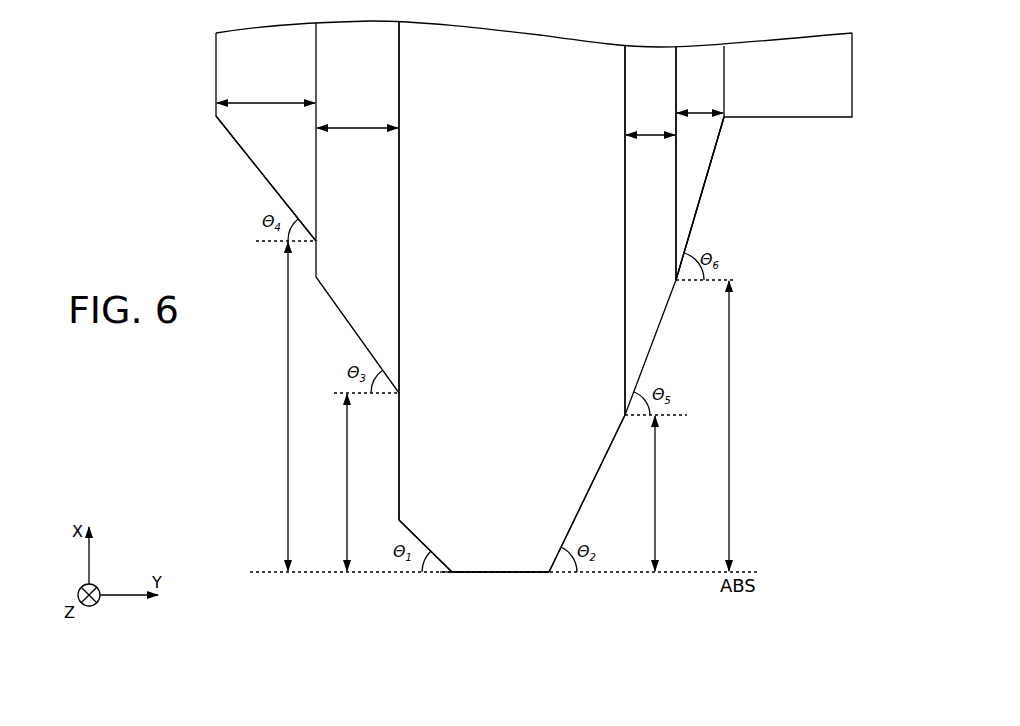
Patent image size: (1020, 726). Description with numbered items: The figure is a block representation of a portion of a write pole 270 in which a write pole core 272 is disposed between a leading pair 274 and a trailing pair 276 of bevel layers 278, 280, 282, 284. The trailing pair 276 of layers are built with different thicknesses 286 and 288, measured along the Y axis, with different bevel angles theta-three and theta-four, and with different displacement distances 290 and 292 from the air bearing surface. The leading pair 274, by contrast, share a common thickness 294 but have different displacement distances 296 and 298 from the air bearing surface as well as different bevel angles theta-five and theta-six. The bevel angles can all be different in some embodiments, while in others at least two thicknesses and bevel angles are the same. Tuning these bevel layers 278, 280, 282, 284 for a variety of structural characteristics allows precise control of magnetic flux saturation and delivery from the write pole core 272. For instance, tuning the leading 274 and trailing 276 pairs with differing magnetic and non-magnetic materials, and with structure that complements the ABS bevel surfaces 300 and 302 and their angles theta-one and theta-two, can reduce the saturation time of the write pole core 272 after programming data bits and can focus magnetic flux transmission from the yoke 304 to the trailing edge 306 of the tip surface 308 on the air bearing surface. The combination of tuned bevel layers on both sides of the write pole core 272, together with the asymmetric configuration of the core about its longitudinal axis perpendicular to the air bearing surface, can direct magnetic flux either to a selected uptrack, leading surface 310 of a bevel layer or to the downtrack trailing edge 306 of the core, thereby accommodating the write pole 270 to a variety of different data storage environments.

The write pole 270 is at (145, 58).
The write pole core 272 is at (512, 297).
The leading pair of bevel layers 274 is at (752, 191).
The trailing pair of bevel layers 276 is at (233, 180).
The bevel layer 278 is at (650, 230).
The bevel layer 280 is at (700, 163).
The bevel layer 282 is at (357, 271).
The bevel layer 284 is at (307, 212).
The thickness 286 is at (357, 117).
The thickness 288 is at (266, 92).
The displacement distance 290 is at (366, 482).
The displacement distance 292 is at (283, 406).
The common thickness 294 is at (674, 125).
The displacement distance 296 is at (652, 493).
The displacement distance 298 is at (722, 425).
The ABS bevel surface 300 is at (428, 539).
The ABS bevel surface 302 is at (586, 497).
The yoke 304 is at (788, 75).
The trailing edge 306 is at (452, 574).
The tip surface 308 is at (509, 573).
The leading surface 310 is at (656, 337).